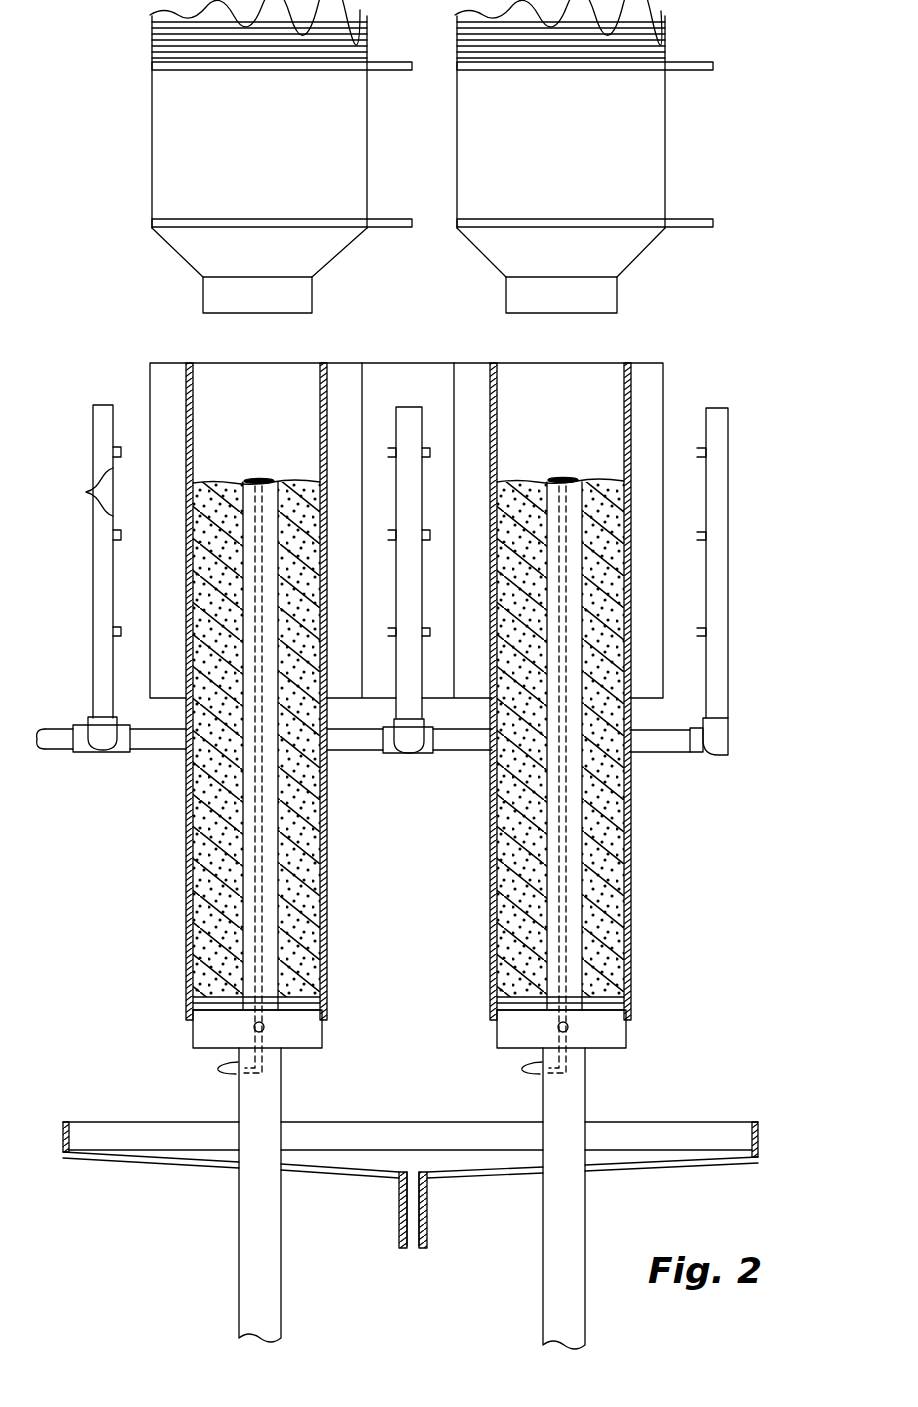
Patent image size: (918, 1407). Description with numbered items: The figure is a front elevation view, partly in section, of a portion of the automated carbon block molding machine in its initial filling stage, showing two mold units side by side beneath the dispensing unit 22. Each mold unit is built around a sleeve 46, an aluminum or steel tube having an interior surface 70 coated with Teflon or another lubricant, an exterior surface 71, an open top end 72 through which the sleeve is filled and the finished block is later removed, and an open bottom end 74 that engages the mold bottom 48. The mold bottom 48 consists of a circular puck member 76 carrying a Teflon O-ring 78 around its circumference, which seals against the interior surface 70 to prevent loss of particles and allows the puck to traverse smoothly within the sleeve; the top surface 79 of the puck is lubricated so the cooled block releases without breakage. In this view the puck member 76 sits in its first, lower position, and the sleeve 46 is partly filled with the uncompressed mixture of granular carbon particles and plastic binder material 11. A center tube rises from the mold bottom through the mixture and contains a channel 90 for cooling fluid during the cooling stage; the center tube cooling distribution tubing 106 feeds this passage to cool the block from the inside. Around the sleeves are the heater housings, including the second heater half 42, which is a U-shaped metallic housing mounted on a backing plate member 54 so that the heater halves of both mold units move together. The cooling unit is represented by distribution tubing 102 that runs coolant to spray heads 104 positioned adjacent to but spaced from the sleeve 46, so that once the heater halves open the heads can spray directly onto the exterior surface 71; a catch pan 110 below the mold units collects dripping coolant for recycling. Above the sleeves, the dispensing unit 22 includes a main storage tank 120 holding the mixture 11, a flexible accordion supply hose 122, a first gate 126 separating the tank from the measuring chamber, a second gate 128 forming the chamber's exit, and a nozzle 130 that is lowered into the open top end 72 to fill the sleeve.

The mixture of granular carbon particles and plastic binder material 11 is at (217, 482).
The dispensing unit 22 is at (680, 140).
The second heater half 42 is at (467, 378).
The sleeve 46 is at (190, 900).
The mold bottom 48 is at (322, 1048).
The backing plate member 54 is at (408, 388).
The interior surface 70 is at (193, 405).
The exterior surface 71 is at (183, 366).
The open top end 72 is at (303, 363).
The open bottom end 74 is at (193, 1023).
The puck member 76 is at (304, 1032).
The Teflon O-ring 78 is at (300, 1006).
The top surface 79 is at (200, 990).
The channel 90 is at (263, 885).
The distribution tubing 102 is at (53, 732).
The spray heads 104 is at (75, 492).
The center tube cooling distribution tubing 106 is at (248, 1062).
The catch pan 110 is at (62, 1130).
The main storage tank 120 is at (163, 135).
The supply hose 122 is at (151, 43).
The first gate 126 is at (386, 70).
The second gate 128 is at (382, 228).
The nozzle 130 is at (205, 287).